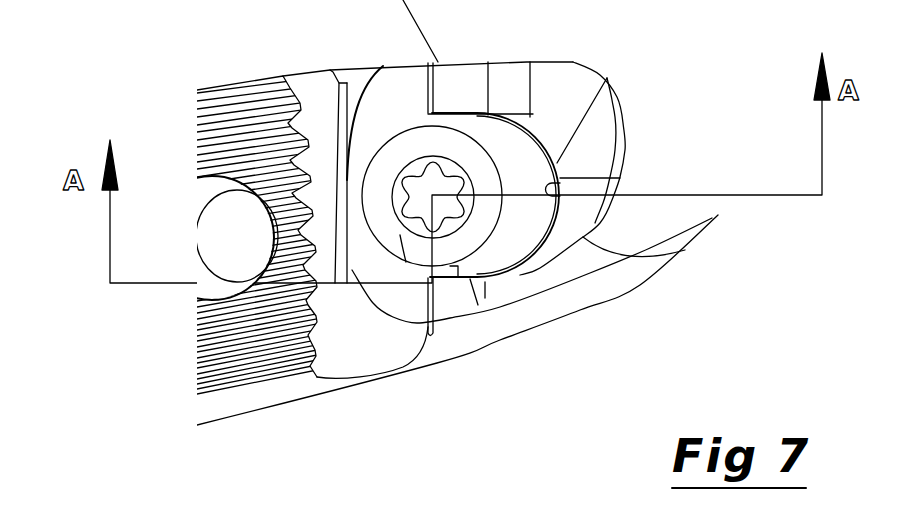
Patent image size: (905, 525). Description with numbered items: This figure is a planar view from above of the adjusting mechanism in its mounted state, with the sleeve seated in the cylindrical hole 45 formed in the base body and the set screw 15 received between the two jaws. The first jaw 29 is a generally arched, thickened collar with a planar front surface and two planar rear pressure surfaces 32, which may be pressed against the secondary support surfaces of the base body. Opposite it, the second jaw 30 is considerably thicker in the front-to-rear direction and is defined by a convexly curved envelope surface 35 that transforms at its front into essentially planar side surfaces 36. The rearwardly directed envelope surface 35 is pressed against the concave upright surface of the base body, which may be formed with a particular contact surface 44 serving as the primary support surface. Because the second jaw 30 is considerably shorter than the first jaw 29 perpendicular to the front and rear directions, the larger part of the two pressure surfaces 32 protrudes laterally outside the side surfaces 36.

The set screw 15 is at (403, 263).
The first jaw 29 is at (368, 90).
The second jaw 30 is at (540, 128).
The rear pressure surfaces 32 is at (433, 90).
The envelope surface 35 is at (560, 219).
The side surfaces 36 is at (480, 110).
The contact surface 44 is at (620, 178).
The cylindrical hole 45 is at (624, 8).